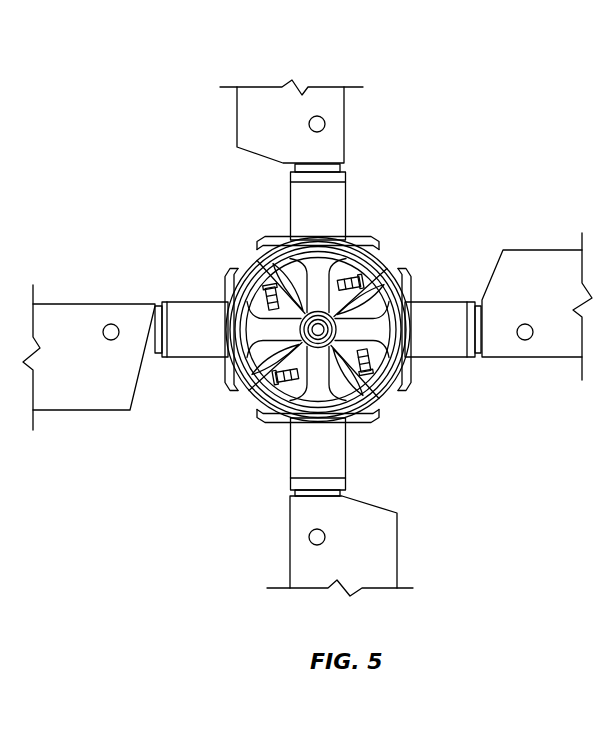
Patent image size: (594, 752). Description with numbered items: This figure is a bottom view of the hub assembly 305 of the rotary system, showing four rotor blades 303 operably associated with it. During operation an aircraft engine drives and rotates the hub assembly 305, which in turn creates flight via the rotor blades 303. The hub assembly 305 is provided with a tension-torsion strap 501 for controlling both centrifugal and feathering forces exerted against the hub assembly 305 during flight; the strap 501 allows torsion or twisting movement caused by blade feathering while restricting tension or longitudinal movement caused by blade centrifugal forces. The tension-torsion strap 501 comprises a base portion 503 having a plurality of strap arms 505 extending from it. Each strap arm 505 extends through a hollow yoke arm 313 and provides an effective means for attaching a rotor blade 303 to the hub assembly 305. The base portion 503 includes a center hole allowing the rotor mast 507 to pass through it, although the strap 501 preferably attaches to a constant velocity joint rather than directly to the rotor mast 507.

The rotor blade 303 is at (553, 250).
The hub assembly 305 is at (305, 363).
The hollow yoke arm 313 is at (437, 357).
The tension-torsion strap 501 is at (375, 353).
The base portion 503 is at (253, 263).
The strap arm 505 is at (407, 290).
The rotor mast 507 is at (240, 388).